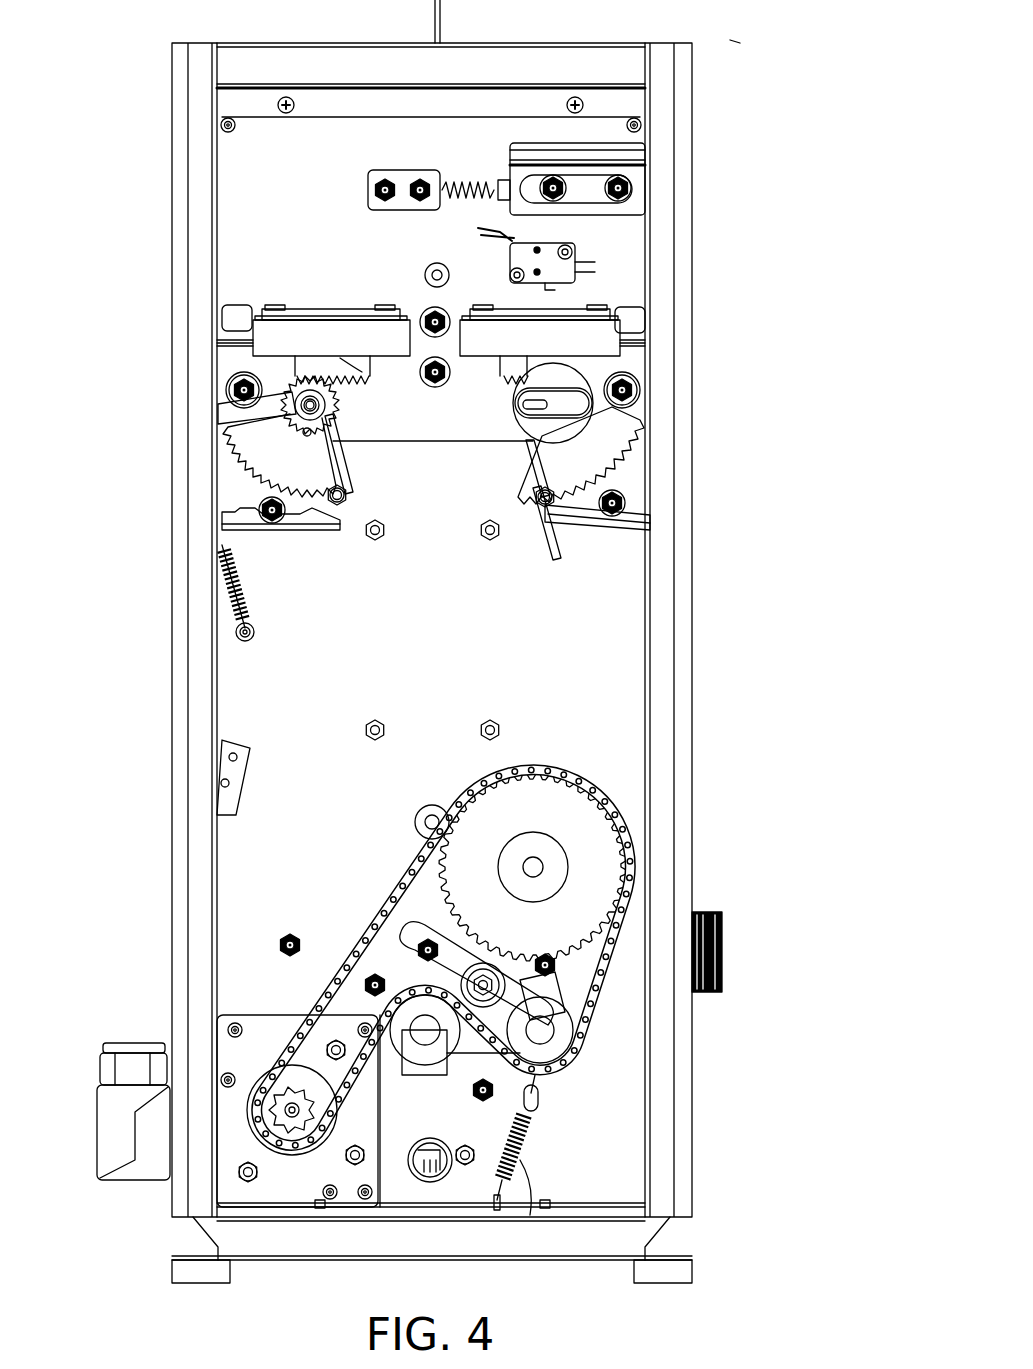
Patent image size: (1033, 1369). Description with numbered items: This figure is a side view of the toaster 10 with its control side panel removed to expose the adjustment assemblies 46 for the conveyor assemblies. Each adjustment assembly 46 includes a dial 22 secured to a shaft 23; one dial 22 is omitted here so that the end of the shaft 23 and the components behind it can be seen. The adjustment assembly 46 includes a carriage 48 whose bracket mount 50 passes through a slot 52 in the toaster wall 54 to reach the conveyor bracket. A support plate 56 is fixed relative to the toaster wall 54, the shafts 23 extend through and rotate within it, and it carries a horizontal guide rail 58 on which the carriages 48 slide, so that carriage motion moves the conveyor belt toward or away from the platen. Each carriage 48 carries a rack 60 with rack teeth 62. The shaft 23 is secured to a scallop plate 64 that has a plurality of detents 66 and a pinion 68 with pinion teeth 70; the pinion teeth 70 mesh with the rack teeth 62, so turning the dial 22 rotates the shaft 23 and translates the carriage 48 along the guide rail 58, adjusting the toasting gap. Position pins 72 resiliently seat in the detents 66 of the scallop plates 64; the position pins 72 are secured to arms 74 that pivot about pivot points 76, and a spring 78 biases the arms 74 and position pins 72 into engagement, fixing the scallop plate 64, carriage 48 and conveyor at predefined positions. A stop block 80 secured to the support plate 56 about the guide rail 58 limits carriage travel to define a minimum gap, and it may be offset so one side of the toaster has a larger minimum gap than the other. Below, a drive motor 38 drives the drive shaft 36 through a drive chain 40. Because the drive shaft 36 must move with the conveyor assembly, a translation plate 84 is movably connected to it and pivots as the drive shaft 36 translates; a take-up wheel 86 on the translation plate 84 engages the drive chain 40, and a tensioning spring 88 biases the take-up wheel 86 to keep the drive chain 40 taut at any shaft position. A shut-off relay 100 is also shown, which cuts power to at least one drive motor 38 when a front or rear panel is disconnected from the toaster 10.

The toaster 10 is at (730, 40).
The dial 22 is at (553, 378).
The shaft 23 is at (275, 425).
The drive shaft 36 is at (533, 867).
The drive motor 38 is at (273, 1030).
The drive chain 40 is at (597, 802).
The adjustment assembly 46 is at (268, 305).
The carriage 48 is at (328, 338).
The bracket mount 50 is at (307, 312).
The slot 52 is at (232, 308).
The toaster wall 54 is at (235, 185).
The support plate 56 is at (237, 348).
The guide rail 58 is at (232, 326).
The rack 60 is at (300, 357).
The rack teeth 62 is at (360, 372).
The scallop plate 64 is at (330, 470).
The detents 66 is at (255, 483).
The pinion 68 is at (300, 388).
The pinion teeth 70 is at (345, 420).
The position pin 72 is at (337, 505).
The arm 74 is at (320, 530).
The pivot point 76 is at (280, 522).
The spring 78 is at (230, 605).
The stop block 80 is at (422, 315).
The translation plate 84 is at (442, 940).
The take-up wheel 86 is at (570, 1030).
The tensioning spring 88 is at (519, 1182).
The shut-off relay 100 is at (478, 224).